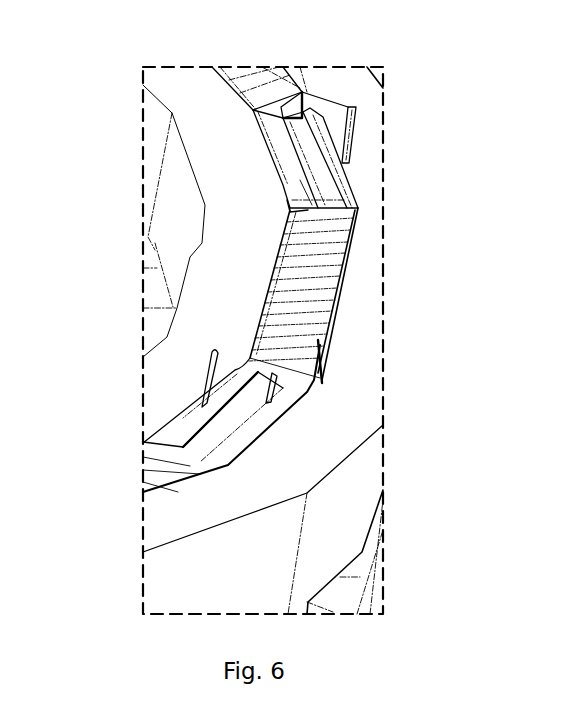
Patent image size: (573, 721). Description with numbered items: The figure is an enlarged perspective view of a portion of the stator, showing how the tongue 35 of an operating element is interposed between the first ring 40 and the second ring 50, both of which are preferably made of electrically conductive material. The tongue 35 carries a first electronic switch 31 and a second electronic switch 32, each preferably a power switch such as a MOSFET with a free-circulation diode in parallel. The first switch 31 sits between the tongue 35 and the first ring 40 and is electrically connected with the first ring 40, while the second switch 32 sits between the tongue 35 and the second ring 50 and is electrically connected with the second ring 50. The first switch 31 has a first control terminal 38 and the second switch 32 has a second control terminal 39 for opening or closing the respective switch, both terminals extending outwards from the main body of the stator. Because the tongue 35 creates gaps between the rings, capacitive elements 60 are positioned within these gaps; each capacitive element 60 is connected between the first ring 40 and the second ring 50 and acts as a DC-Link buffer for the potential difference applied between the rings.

The first electronic switch 31 is at (282, 185).
The second electronic switch 32 is at (348, 178).
The tongue 35 is at (317, 198).
The first control terminal 38 is at (281, 107).
The second control terminal 39 is at (348, 107).
The first ring 40 is at (187, 268).
The second ring 50 is at (348, 458).
The capacitive element 60 is at (307, 308).